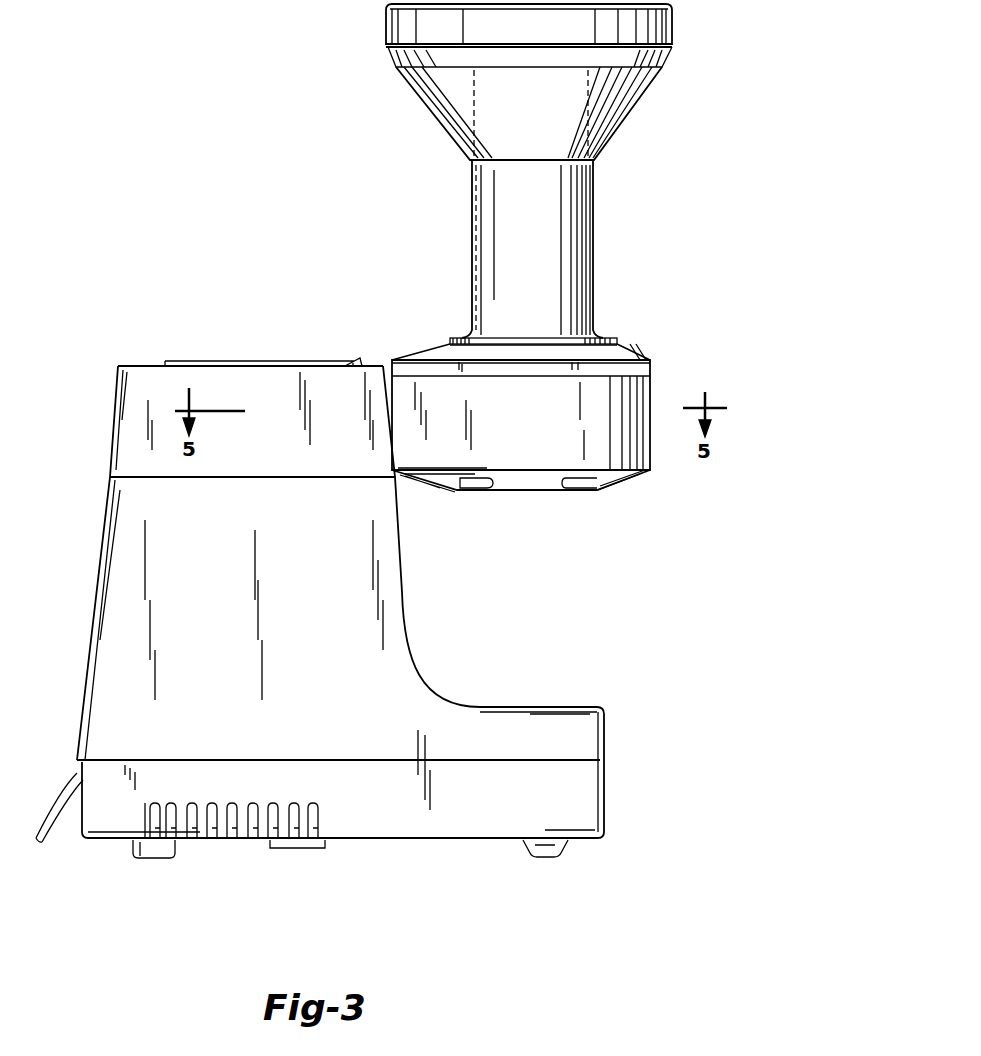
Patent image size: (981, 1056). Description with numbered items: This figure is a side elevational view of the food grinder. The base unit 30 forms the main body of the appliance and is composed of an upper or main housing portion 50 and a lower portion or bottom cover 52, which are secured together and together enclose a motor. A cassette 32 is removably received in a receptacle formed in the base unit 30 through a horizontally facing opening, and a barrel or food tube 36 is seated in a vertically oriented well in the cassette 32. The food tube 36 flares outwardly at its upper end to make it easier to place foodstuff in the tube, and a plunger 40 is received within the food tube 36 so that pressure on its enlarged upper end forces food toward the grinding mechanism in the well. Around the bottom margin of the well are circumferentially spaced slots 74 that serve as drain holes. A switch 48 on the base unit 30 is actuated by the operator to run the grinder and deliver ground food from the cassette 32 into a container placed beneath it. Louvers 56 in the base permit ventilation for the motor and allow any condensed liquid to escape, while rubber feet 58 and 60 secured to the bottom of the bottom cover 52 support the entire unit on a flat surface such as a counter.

The base unit 30 is at (397, 592).
The cassette 32 is at (641, 400).
The food tube 36 is at (573, 247).
The plunger 40 is at (590, 118).
The switch 48 is at (560, 720).
The main housing portion 50 is at (97, 584).
The bottom cover 52 is at (588, 790).
The louvers 56 is at (318, 815).
The foot 58 is at (545, 858).
The foot 60 is at (158, 858).
The slots 74 is at (480, 491).